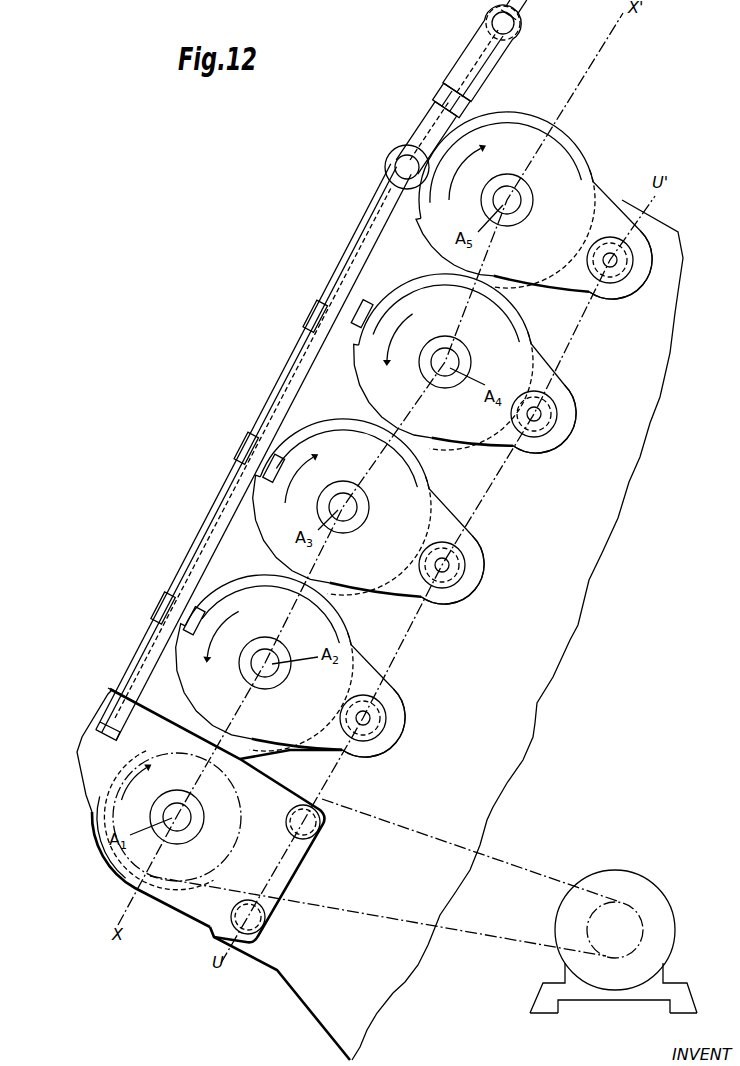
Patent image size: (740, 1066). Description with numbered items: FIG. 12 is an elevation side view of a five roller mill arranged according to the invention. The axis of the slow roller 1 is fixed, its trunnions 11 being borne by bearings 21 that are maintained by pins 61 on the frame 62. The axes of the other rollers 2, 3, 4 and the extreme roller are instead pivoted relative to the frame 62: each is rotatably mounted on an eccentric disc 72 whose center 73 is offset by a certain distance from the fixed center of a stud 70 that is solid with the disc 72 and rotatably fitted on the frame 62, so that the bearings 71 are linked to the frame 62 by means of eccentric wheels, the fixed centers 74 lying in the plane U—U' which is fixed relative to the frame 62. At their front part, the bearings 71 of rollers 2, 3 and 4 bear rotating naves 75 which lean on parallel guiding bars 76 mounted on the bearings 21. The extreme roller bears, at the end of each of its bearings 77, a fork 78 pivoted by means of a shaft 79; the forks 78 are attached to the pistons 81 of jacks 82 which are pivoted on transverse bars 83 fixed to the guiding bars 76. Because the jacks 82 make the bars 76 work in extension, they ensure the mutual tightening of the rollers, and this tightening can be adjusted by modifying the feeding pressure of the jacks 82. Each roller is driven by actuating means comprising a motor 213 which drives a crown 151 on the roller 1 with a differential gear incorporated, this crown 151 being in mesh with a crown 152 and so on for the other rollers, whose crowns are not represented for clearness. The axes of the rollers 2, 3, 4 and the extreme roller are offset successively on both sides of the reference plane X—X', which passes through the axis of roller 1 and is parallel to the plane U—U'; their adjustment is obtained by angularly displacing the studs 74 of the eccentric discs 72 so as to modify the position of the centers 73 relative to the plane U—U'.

The slow roller 1 is at (108, 873).
The roller 2 is at (250, 580).
The roller 3 is at (325, 423).
The roller 4 is at (407, 288).
The trunnions 11 is at (192, 828).
The bearings 21 is at (95, 758).
The pins 61 is at (300, 826).
The frame 62 is at (345, 1003).
The studs 70 is at (612, 258).
The bearings 71 is at (190, 682).
The discs 72 is at (602, 280).
The centers 73 is at (617, 262).
The centers 74 is at (632, 280).
The rotating naves 75 is at (243, 442).
The guiding bars 76 is at (228, 502).
The bearings 77 is at (455, 215).
The fork 78 is at (420, 133).
The shaft 79 is at (400, 170).
The pistons 81 is at (440, 110).
The jacks 82 is at (455, 80).
The transverse bars 83 is at (500, 23).
The crown 151 is at (98, 813).
The crown 152 is at (160, 703).
The motor 213 is at (572, 922).